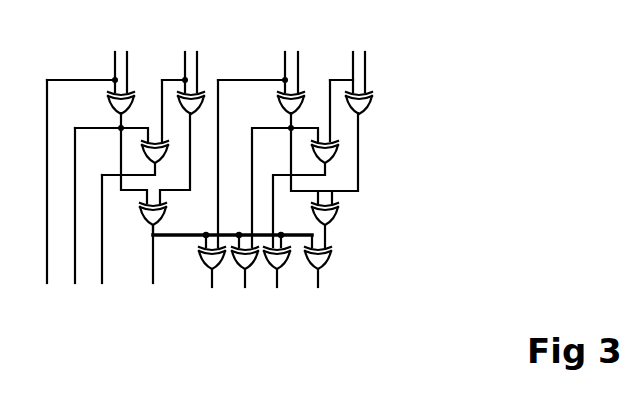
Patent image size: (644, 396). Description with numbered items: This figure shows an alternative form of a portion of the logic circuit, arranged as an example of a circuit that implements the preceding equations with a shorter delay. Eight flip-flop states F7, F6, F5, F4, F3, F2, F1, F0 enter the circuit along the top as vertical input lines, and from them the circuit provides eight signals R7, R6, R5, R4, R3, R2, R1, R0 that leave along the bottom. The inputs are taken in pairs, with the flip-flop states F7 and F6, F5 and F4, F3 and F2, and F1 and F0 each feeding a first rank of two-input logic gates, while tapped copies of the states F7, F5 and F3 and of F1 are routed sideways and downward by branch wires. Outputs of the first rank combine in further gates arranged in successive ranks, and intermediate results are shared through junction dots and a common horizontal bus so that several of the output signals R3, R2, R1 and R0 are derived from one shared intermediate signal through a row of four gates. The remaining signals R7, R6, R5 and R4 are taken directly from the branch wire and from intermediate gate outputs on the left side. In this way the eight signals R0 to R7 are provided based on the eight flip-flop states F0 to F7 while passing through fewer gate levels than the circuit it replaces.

The flip-flop state F7 is at (103, 60).
The flip-flop state F6 is at (135, 60).
The flip-flop state F5 is at (173, 60).
The flip-flop state F4 is at (205, 60).
The flip-flop state F3 is at (275, 60).
The flip-flop state F2 is at (308, 60).
The flip-flop state F1 is at (342, 60).
The flip-flop state F0 is at (375, 60).
The signal R7 is at (38, 198).
The signal R6 is at (74, 222).
The signal R5 is at (110, 246).
The signal R4 is at (152, 271).
The signal R3 is at (205, 293).
The signal R2 is at (238, 293).
The signal R1 is at (279, 293).
The signal R0 is at (318, 293).